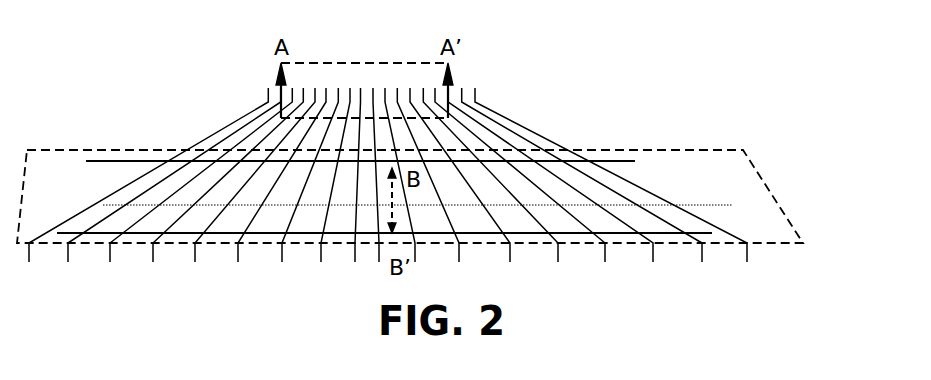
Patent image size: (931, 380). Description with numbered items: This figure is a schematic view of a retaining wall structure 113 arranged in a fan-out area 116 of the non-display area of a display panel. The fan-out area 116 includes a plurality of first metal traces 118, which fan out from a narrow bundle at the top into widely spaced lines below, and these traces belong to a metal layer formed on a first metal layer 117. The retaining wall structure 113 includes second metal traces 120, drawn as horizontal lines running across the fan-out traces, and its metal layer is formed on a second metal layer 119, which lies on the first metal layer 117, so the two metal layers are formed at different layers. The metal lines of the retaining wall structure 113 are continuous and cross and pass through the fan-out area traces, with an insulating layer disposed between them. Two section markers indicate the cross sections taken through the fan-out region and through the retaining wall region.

The fan-out area 116 is at (223, 110).
The first metal traces 118 is at (560, 166).
The first metal layer 117 is at (547, 138).
The second metal layer 119 is at (743, 150).
The second metal traces 120 is at (402, 197).
The retaining wall structure 113 is at (715, 184).